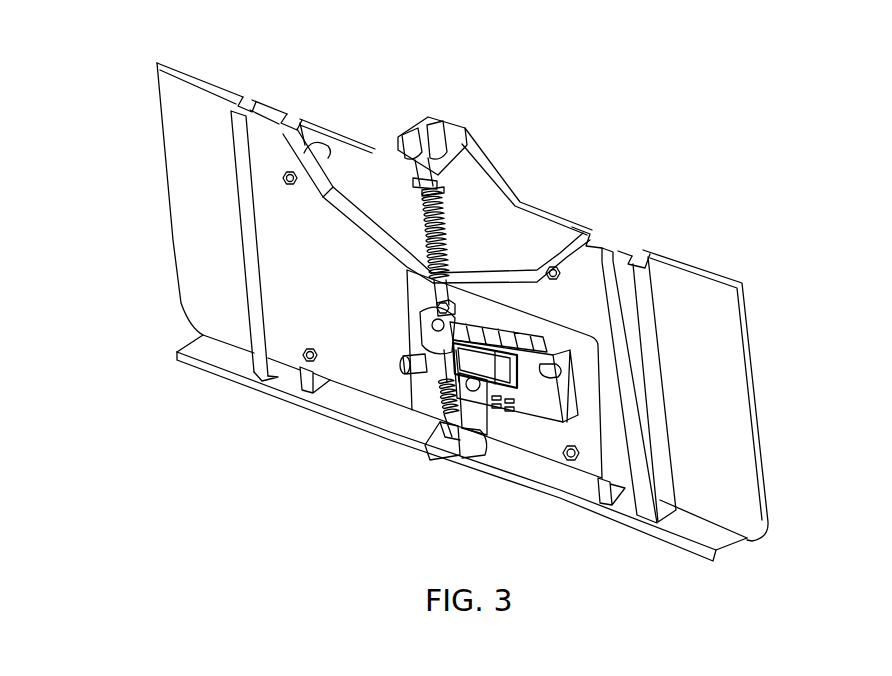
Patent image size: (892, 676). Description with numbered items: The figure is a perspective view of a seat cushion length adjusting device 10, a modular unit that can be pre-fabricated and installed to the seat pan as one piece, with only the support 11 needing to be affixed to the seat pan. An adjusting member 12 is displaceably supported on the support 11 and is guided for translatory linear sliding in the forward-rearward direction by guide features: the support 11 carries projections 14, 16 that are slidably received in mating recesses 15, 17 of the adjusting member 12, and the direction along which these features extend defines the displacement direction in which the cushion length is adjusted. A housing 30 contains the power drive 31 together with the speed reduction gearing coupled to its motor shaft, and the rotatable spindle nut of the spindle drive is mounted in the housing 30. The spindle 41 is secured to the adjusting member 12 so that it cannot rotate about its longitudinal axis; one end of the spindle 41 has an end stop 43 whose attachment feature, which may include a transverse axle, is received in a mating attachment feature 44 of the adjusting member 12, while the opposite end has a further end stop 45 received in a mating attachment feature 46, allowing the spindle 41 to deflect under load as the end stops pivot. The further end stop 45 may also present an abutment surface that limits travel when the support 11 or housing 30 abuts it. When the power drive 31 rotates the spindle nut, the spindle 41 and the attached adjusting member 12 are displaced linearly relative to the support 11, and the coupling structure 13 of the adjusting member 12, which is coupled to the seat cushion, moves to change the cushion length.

The seat cushion length adjusting device 10 is at (120, 55).
The support 11 is at (330, 168).
The adjusting member 12 is at (172, 245).
The coupling structure 13 is at (210, 372).
The projection 14 is at (635, 250).
The recess 15 is at (598, 240).
The projection 16 is at (258, 104).
The recess 17 is at (293, 118).
The housing 30 is at (553, 332).
The power drive 31 is at (492, 370).
The spindle 41 is at (442, 208).
The end stop 43 is at (428, 185).
The attachment feature 44 is at (455, 150).
The further end stop 45 is at (440, 410).
The attachment feature 46 is at (428, 440).